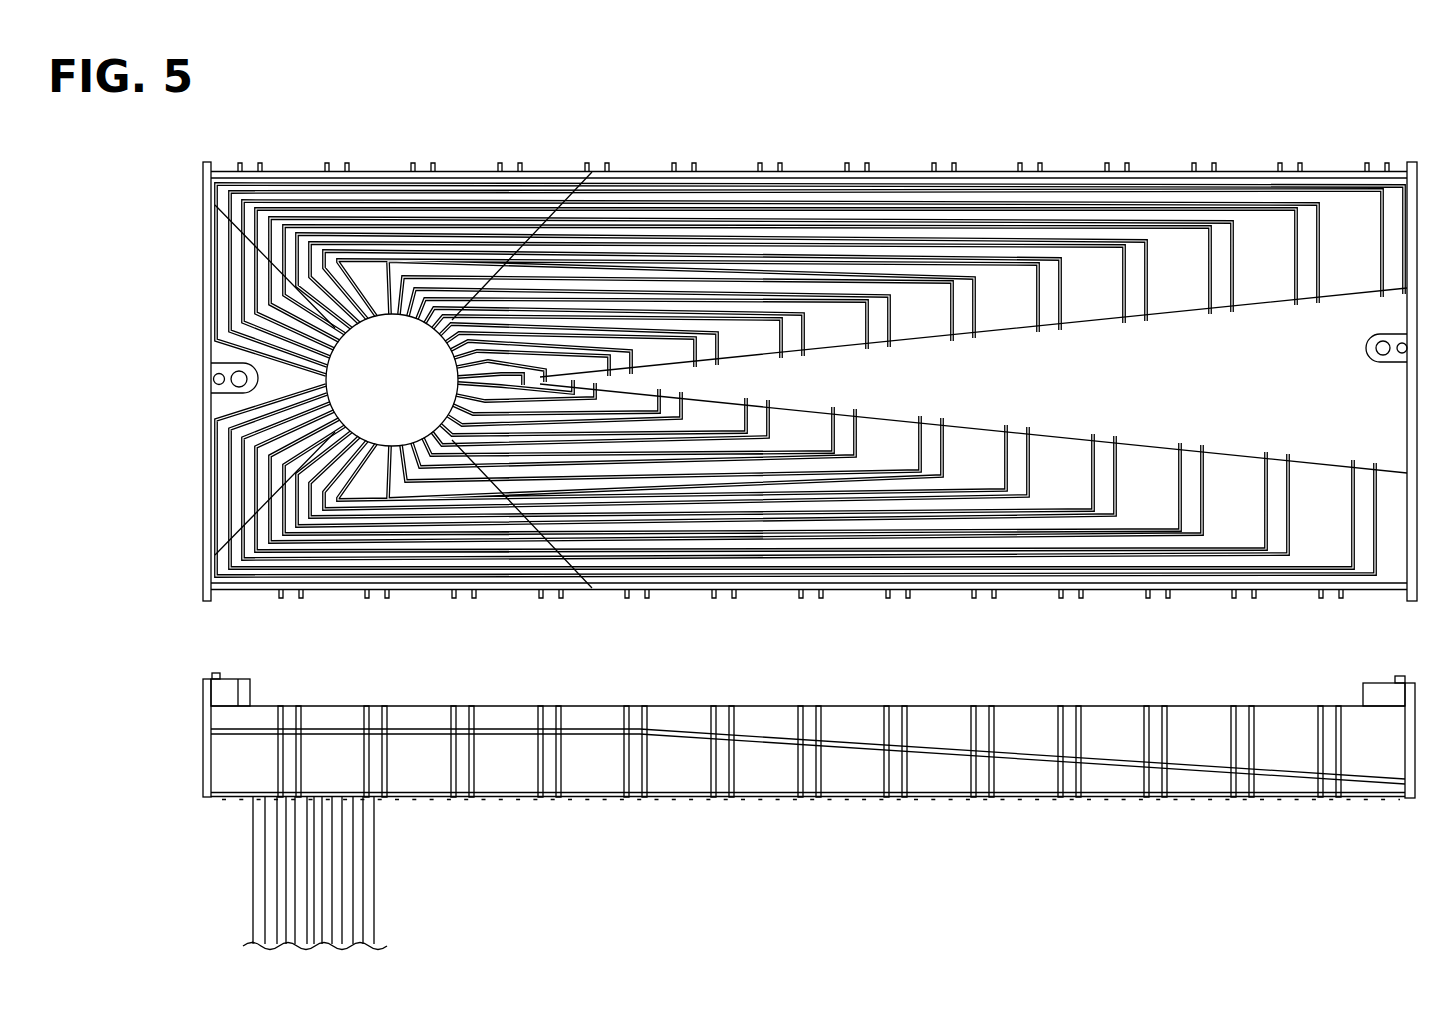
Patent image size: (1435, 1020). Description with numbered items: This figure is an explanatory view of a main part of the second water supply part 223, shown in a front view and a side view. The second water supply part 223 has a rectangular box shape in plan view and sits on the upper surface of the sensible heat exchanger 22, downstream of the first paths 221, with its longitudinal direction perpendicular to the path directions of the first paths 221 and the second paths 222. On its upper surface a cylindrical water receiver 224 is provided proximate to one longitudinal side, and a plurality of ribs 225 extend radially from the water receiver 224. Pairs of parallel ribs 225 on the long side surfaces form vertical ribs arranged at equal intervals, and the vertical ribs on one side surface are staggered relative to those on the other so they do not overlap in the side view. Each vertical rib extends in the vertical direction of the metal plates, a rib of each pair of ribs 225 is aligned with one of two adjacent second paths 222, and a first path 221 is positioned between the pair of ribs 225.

The sensible heat exchanger 22 is at (457, 811).
The first path 221 is at (307, 907).
The second path 222 is at (313, 847).
The second water supply part 223 is at (1126, 149).
The water receiver 224 is at (391, 316).
The rib 225 is at (346, 178).